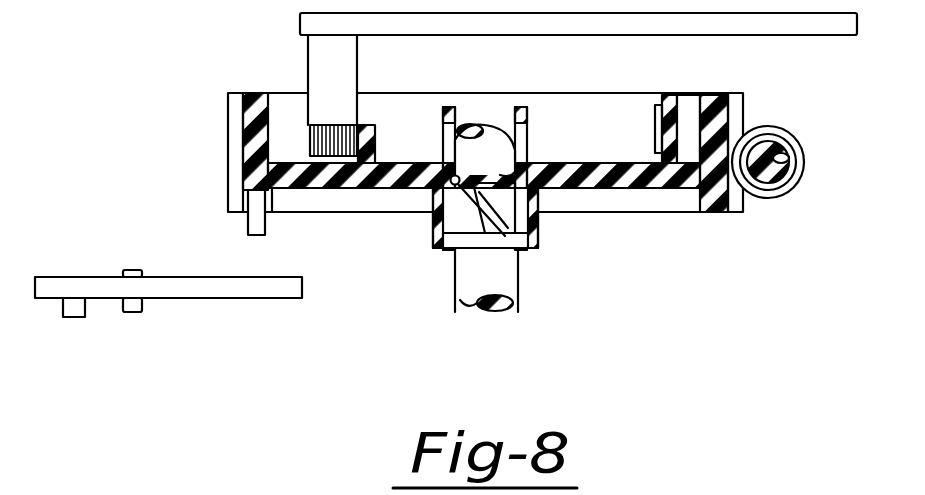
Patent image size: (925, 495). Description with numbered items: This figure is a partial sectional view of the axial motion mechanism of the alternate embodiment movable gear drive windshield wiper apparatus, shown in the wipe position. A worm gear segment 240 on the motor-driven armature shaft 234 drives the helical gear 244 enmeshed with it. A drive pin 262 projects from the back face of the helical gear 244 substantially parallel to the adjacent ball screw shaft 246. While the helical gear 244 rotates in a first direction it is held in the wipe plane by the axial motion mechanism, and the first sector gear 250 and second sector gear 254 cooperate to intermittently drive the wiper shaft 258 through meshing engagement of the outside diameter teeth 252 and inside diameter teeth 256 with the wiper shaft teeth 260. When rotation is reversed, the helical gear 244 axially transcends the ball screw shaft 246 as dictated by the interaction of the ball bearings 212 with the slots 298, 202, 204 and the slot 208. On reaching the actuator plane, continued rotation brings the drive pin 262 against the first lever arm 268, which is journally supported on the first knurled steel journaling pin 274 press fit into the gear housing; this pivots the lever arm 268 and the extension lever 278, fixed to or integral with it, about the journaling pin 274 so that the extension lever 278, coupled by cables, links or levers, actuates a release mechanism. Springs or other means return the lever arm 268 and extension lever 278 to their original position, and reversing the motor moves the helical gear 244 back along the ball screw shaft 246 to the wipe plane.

The slot 202 is at (513, 300).
The slot 204 is at (512, 240).
The slot 208 is at (451, 183).
The ball bearings 212 is at (537, 212).
The armature shaft 234 is at (780, 157).
The worm gear segment 240 is at (770, 200).
The helical gear 244 is at (253, 119).
The ball screw shaft 246 is at (465, 300).
The first sector gear 250 is at (338, 160).
The outside diameter teeth 252 is at (343, 190).
The second sector gear 254 is at (672, 95).
The inside diameter teeth 256 is at (655, 130).
The wiper shaft 258 is at (322, 52).
The wiper shaft teeth 260 is at (315, 147).
The drive pin 262 is at (250, 215).
The first lever arm 268 is at (186, 292).
The first knurled steel journaling pin 274 is at (134, 270).
The extension lever 278 is at (72, 312).
The slot 298 is at (531, 116).